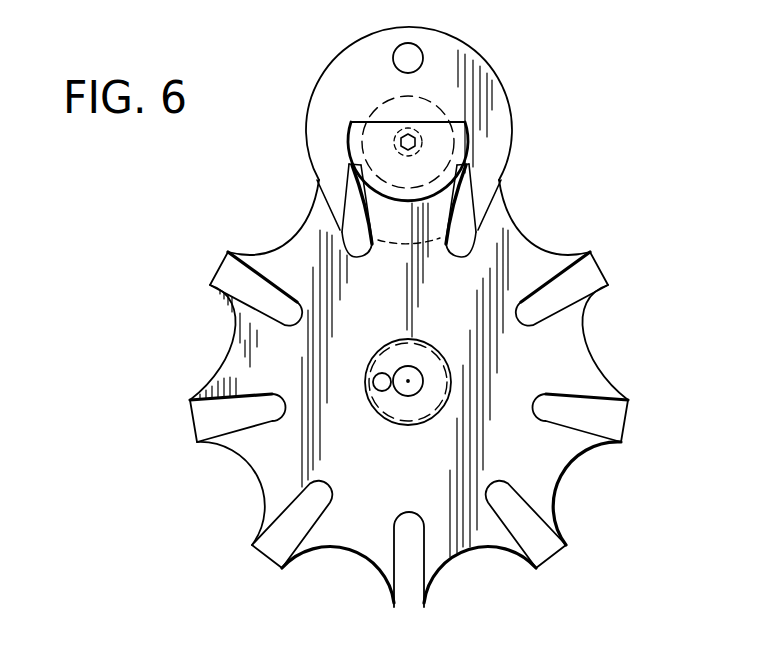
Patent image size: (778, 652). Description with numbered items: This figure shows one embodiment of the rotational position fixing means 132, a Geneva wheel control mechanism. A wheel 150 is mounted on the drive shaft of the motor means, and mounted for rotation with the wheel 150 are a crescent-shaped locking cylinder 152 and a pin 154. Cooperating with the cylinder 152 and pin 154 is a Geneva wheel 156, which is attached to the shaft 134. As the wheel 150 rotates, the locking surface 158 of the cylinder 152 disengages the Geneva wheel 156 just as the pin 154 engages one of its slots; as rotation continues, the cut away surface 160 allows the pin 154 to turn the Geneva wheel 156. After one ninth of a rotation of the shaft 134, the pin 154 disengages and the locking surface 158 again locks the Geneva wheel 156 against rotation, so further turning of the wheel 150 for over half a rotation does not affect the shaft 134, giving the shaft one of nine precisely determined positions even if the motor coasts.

The rotational position fixing means 132 is at (428, 393).
The shaft 134 is at (397, 402).
The wheel 150 is at (498, 118).
The crescent-shaped locking cylinder 152 is at (362, 145).
The pin 154 is at (393, 55).
The Geneva wheel 156 is at (565, 353).
The locking surface 158 is at (387, 245).
The cut away surface 160 is at (437, 127).